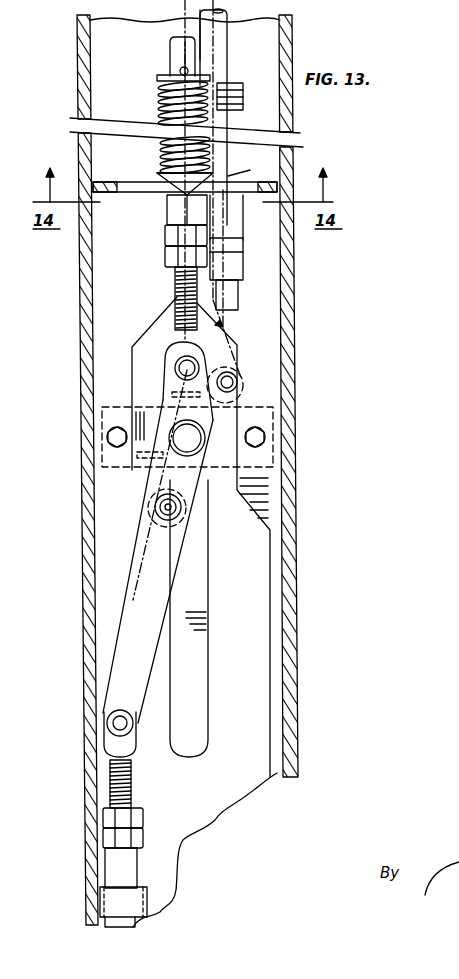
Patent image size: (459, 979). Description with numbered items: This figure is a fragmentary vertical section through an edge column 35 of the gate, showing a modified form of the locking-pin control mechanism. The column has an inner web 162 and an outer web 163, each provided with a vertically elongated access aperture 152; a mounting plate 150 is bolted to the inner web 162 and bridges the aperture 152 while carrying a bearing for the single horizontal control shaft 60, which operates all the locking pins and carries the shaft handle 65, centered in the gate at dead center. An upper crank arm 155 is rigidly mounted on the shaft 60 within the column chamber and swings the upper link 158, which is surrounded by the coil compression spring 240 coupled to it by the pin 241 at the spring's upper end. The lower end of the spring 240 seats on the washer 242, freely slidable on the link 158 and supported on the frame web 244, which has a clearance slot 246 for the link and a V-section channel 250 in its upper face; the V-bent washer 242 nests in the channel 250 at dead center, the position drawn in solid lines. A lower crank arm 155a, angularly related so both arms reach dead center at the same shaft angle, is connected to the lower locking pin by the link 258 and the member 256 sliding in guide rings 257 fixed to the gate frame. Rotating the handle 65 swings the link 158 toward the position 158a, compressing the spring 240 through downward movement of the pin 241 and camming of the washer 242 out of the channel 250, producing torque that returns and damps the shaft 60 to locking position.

The edge column 35 is at (298, 522).
The control shaft 60 is at (203, 423).
The shaft handle 65 is at (203, 677).
The mounting plate 150 is at (223, 470).
The access aperture 152 is at (270, 567).
The crank arm 155 is at (177, 370).
The lower crank arm 155a is at (190, 493).
The link 158 is at (163, 222).
The displaced link position 158a is at (230, 297).
The inner web 162 is at (268, 273).
The outer web 163 is at (87, 100).
The coil compression spring 240 is at (158, 104).
The pin 241 is at (180, 71).
The washer 242 is at (157, 160).
The frame web 244 is at (160, 202).
The clearance slot 246 is at (117, 190).
The channel 250 is at (207, 212).
The sliding member 256 is at (113, 858).
The guide ring 257 is at (117, 902).
The link 258 is at (118, 660).